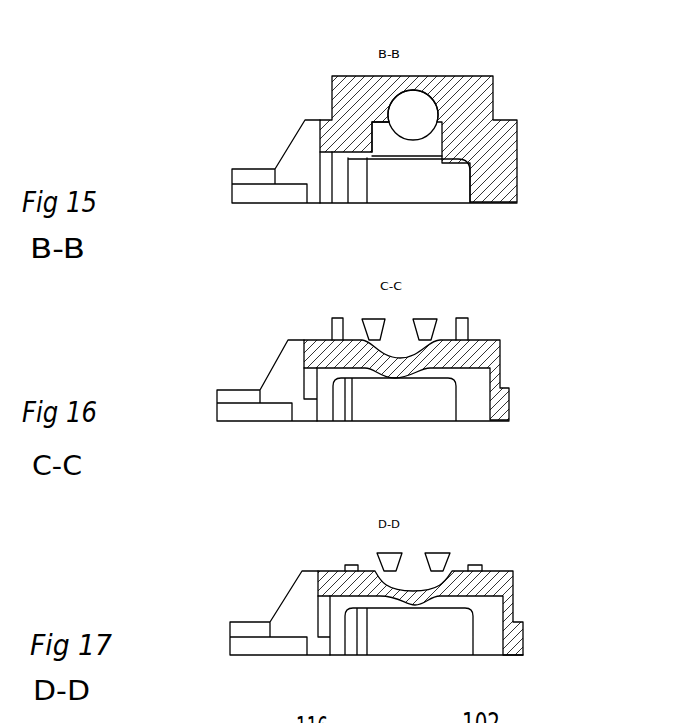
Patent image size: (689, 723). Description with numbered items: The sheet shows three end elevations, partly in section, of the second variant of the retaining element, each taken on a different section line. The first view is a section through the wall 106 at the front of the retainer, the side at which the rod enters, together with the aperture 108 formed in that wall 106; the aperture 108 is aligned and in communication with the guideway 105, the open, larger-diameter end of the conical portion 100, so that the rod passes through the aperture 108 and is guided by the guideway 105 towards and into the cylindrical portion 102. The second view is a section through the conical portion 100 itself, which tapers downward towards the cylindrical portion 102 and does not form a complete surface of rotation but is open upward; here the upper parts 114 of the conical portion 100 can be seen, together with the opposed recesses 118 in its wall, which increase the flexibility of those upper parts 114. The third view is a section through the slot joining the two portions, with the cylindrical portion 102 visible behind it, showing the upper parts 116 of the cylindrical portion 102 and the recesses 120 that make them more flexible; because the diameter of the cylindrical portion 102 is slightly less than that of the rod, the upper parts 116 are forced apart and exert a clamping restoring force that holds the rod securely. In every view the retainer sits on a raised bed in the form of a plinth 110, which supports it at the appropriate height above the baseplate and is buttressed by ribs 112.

In FIG. 16, the conical portion 100 is at (400, 338).
In FIG. 17, the cylindrical portion 102 is at (413, 568).
In FIG. 15, the guideway 105 is at (408, 117).
In FIG. 15, the wall 106 is at (482, 95).
In FIG. 15, the aperture 108 is at (414, 115).
In FIG. 15, the plinth 110 is at (502, 147).
In FIG. 16, the plinth 110 is at (505, 370).
In FIG. 17, the plinth 110 is at (513, 607).
In FIG. 15, the ribs 112 is at (298, 152).
In FIG. 16, the ribs 112 is at (292, 380).
In FIG. 17, the ribs 112 is at (300, 615).
In FIG. 16, the upper parts of the conical portion 114 is at (378, 328).
In FIG. 17, the upper parts of the cylindrical portion 116 is at (390, 552).
In FIG. 16, the recesses in the conical portion 118 is at (364, 332).
In FIG. 17, the recesses in the cylindrical portion 120 is at (380, 567).